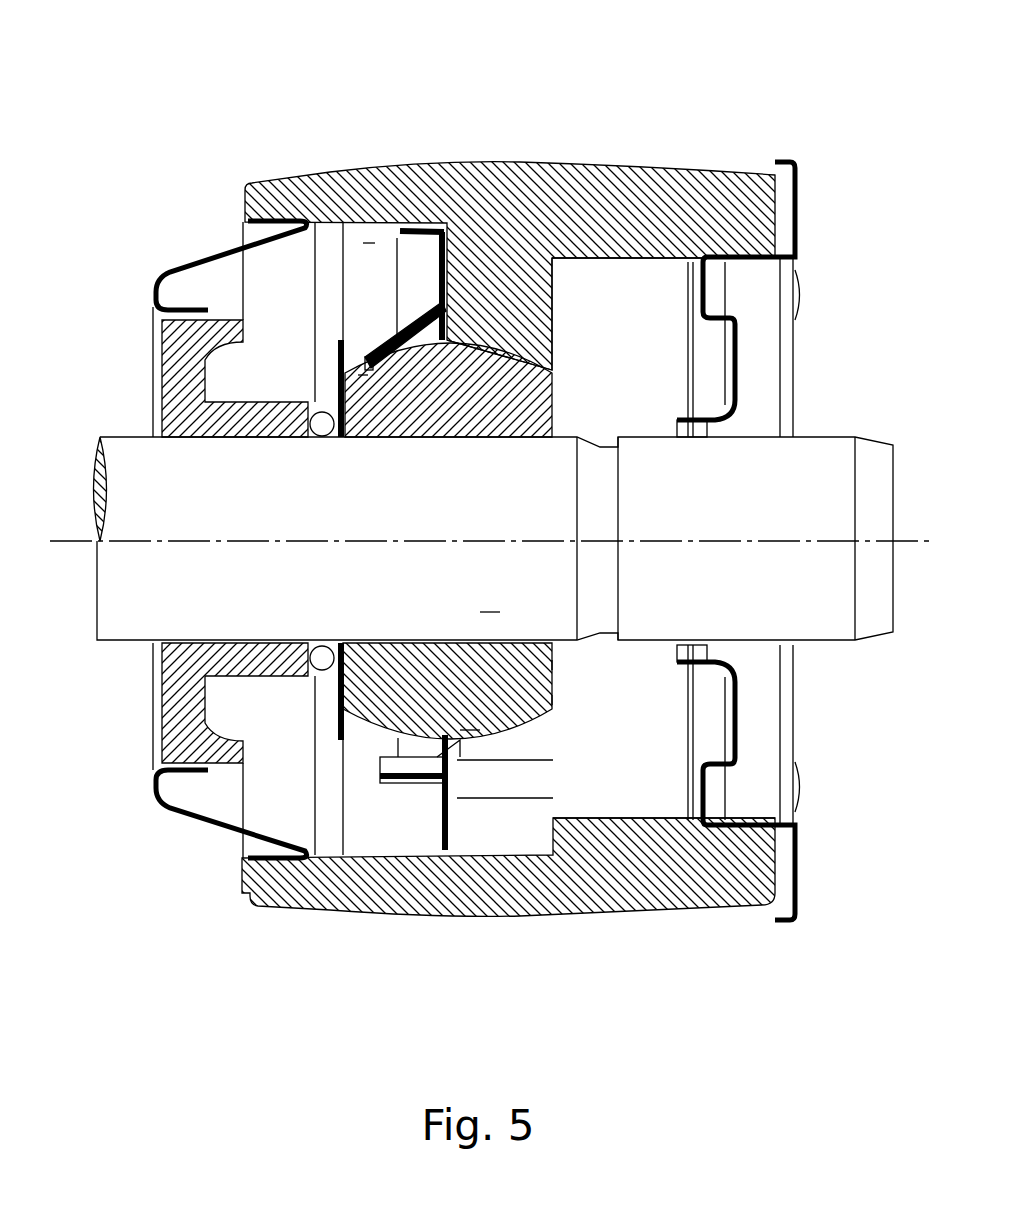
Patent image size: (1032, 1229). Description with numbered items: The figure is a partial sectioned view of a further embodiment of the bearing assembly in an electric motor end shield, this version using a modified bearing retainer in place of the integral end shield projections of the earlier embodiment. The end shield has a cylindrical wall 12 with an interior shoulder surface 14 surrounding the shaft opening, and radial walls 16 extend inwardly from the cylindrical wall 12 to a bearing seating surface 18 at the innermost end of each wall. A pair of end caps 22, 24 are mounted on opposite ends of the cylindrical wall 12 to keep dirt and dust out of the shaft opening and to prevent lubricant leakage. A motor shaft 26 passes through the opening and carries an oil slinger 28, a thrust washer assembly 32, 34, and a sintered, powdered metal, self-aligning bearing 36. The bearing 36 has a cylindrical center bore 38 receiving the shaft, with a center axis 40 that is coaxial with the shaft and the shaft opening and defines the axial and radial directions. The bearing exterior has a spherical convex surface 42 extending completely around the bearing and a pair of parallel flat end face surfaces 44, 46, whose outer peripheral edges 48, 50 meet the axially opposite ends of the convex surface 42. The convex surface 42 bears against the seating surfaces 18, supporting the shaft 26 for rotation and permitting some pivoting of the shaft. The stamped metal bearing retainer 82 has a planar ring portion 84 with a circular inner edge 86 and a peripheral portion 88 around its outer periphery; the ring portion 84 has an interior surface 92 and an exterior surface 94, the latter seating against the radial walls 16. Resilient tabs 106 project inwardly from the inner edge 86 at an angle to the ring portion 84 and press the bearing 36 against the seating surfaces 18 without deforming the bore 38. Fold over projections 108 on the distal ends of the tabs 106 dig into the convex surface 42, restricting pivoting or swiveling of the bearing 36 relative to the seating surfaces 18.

The cylindrical wall 12 is at (538, 165).
The interior shoulder surface 14 is at (411, 248).
The radial walls 16 is at (553, 323).
The bearing seating surface 18 is at (482, 366).
The end cap 22 is at (205, 262).
The end cap 24 is at (797, 212).
The motor shaft 26 is at (131, 455).
The oil slinger 28 is at (165, 357).
The thrust washer assembly 32 is at (322, 660).
The thrust washer assembly 34 is at (343, 705).
The self-aligning bearing 36 is at (472, 735).
The center bore 38 is at (496, 612).
The center axis 40 is at (72, 541).
The convex surface 42 is at (398, 738).
The end face surface 44 is at (340, 395).
The end face surface 46 is at (553, 665).
The outer peripheral edge 48 is at (343, 708).
The outer peripheral edge 50 is at (553, 700).
The bearing retainer 82 is at (387, 226).
The planar ring portion 84 is at (440, 806).
The circular inner edge 86 is at (447, 320).
The peripheral portion 88 is at (420, 235).
The interior surface 92 is at (445, 800).
The exterior surface 94 is at (470, 790).
The resilient tabs 106 is at (371, 240).
The fold over projections 108 is at (370, 380).